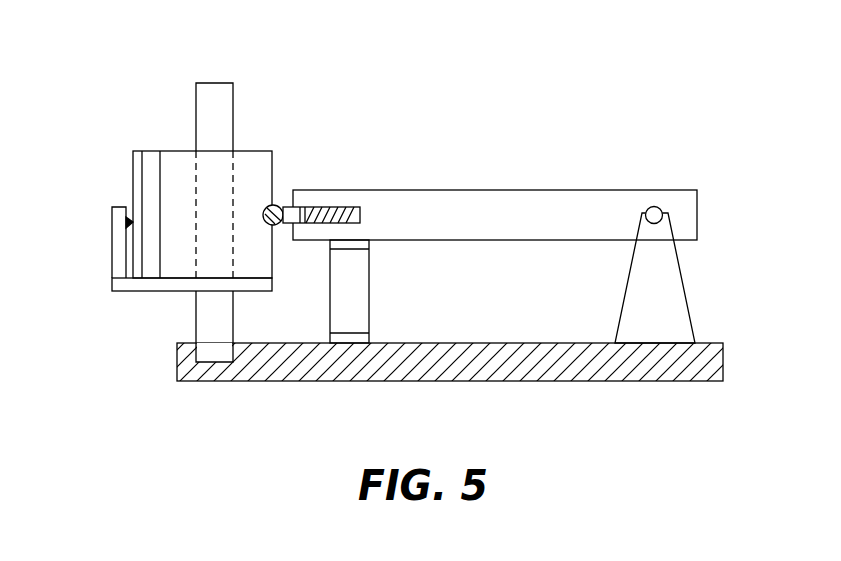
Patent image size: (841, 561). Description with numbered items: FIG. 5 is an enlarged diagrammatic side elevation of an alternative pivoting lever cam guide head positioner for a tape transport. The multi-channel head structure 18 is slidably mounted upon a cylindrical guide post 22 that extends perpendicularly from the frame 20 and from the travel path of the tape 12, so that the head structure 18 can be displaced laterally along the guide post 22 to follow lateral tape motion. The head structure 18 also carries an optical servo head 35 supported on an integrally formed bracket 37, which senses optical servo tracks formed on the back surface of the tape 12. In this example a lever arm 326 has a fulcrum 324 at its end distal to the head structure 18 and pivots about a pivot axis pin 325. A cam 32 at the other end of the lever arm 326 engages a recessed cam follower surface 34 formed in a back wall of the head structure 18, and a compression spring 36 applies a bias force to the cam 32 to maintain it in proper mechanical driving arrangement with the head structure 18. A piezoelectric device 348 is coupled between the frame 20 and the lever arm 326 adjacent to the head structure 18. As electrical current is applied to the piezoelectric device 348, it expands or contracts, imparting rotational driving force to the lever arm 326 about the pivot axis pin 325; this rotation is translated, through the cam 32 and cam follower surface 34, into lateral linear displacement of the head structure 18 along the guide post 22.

The tape 12 is at (134, 178).
The head structure 18 is at (175, 155).
The frame 20 is at (560, 342).
The guide post 22 is at (208, 346).
The cam 32 is at (283, 203).
The cam follower surface 34 is at (270, 206).
The optical servo head 35 is at (116, 228).
The compression spring 36 is at (331, 206).
The bracket 37 is at (122, 288).
The fulcrum 324 is at (670, 325).
The pivot axis pin 325 is at (658, 207).
The lever arm 326 is at (533, 205).
The piezoelectric device 348 is at (367, 293).